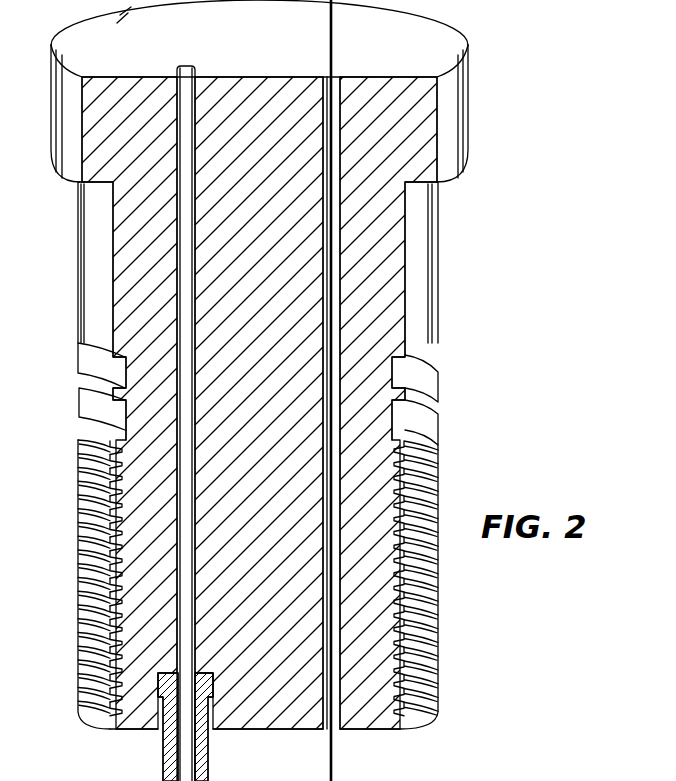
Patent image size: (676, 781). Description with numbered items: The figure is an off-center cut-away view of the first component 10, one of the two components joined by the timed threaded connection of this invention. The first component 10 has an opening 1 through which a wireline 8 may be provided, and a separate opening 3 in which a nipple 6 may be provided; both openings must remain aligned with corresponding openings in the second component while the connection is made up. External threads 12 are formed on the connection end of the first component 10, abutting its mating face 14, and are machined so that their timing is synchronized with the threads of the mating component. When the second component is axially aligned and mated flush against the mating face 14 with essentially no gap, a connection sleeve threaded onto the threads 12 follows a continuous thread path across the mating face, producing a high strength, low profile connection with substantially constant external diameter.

The first component 10 is at (455, 40).
The opening 1 is at (337, 230).
The opening 3 is at (186, 248).
The threads 12 is at (83, 541).
The nipple 6 is at (163, 760).
The wireline 8 is at (333, 780).
The mating face 14 is at (372, 733).